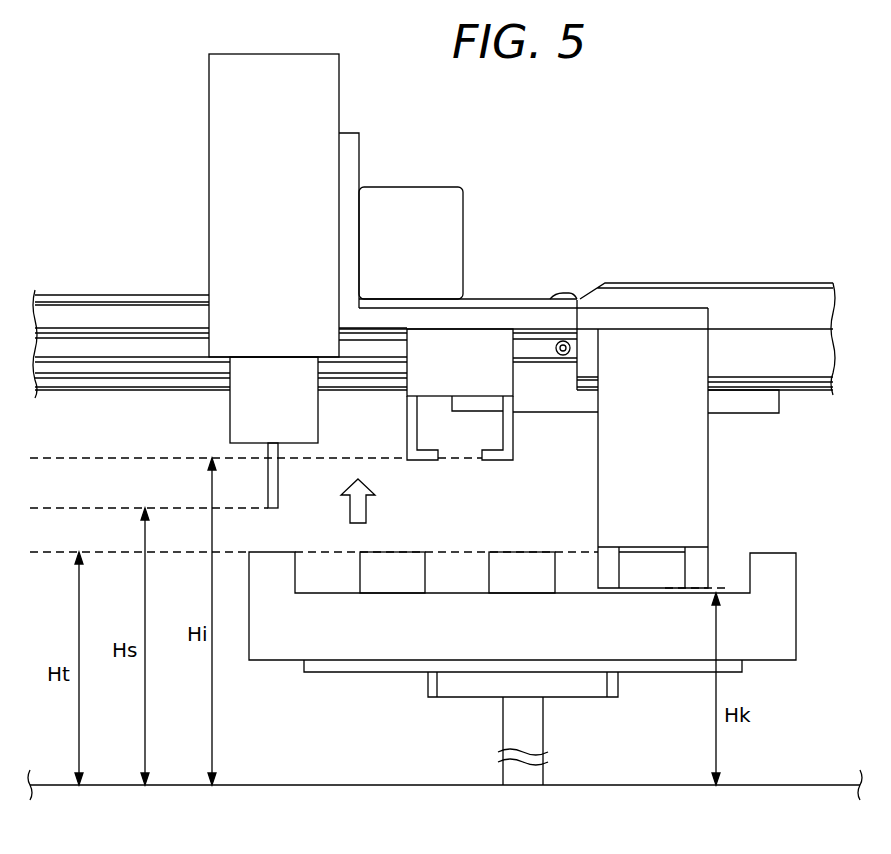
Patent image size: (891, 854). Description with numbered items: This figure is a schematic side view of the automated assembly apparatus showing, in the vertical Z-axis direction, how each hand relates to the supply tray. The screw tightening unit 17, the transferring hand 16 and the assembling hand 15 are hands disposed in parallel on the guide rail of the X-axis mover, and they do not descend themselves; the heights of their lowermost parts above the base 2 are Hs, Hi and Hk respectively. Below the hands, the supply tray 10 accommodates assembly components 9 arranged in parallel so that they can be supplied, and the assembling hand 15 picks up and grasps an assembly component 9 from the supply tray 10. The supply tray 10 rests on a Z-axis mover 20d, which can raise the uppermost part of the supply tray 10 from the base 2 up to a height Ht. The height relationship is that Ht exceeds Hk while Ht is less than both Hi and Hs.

The screw tightening unit 17 is at (228, 236).
The transferring hand 16 is at (492, 355).
The assembling hand 15 is at (657, 355).
The assembly component 9 is at (640, 568).
The supply tray 10 is at (775, 627).
The base 2 is at (273, 785).
The Z-axis mover 20d is at (530, 732).